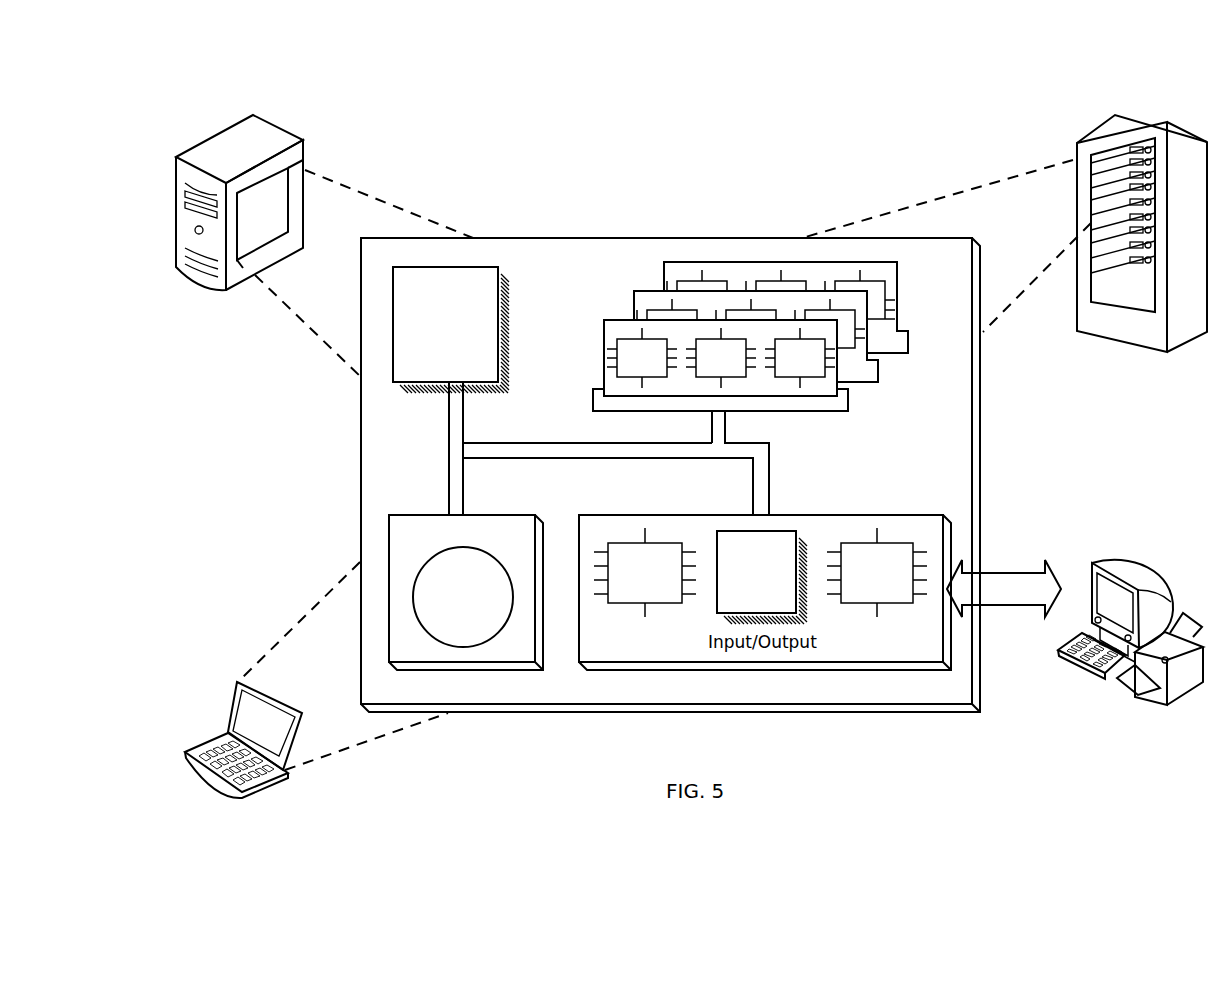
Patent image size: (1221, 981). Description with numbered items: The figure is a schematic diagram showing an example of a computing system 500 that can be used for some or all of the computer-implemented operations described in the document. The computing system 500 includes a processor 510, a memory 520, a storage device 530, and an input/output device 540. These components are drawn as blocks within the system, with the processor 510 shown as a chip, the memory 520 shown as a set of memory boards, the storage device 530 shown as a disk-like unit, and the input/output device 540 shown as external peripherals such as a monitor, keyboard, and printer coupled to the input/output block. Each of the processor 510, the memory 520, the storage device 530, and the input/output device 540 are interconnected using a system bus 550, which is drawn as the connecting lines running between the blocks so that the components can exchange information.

The computer system 500 is at (176, 93).
The processor 510 is at (451, 330).
The memory 520 is at (899, 377).
The storage device 530 is at (466, 592).
The input/output devices 540 is at (1090, 562).
The bus 550 is at (600, 459).